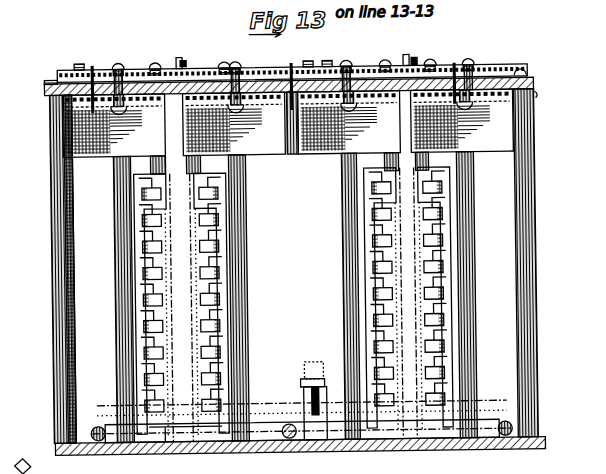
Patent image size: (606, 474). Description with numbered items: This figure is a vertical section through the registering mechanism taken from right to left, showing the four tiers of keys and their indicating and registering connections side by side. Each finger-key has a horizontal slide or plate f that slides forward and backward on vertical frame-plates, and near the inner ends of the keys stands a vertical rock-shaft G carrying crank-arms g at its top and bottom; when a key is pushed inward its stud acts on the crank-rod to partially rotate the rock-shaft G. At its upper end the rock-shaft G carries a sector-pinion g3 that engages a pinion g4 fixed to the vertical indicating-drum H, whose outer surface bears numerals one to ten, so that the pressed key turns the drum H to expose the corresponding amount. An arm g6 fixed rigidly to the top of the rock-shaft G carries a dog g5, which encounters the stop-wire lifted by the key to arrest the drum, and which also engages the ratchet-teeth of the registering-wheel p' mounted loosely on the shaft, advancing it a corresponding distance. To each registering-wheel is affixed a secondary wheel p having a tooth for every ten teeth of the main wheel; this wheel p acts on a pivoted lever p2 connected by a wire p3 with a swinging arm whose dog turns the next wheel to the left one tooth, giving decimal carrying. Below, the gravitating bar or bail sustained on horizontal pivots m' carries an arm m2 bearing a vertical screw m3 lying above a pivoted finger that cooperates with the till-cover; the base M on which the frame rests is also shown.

The secondary wheel p is at (284, 68).
The pivoted lever p2 is at (277, 70).
The wire p3 is at (82, 67).
The registering-wheel p' is at (327, 56).
The sector-pinion g3 is at (544, 99).
The pinion g4 is at (124, 61).
The arm g6 is at (157, 66).
The dog g5 is at (412, 53).
The crank-arm g is at (458, 65).
The indicating-drum H is at (288, 123).
The rock-shaft G is at (115, 185).
The horizontal slide or plate f is at (147, 219).
The horizontal pivot m' is at (323, 420).
The arm m2 is at (302, 398).
The vertical screw m3 is at (320, 381).
The base plate M is at (344, 444).